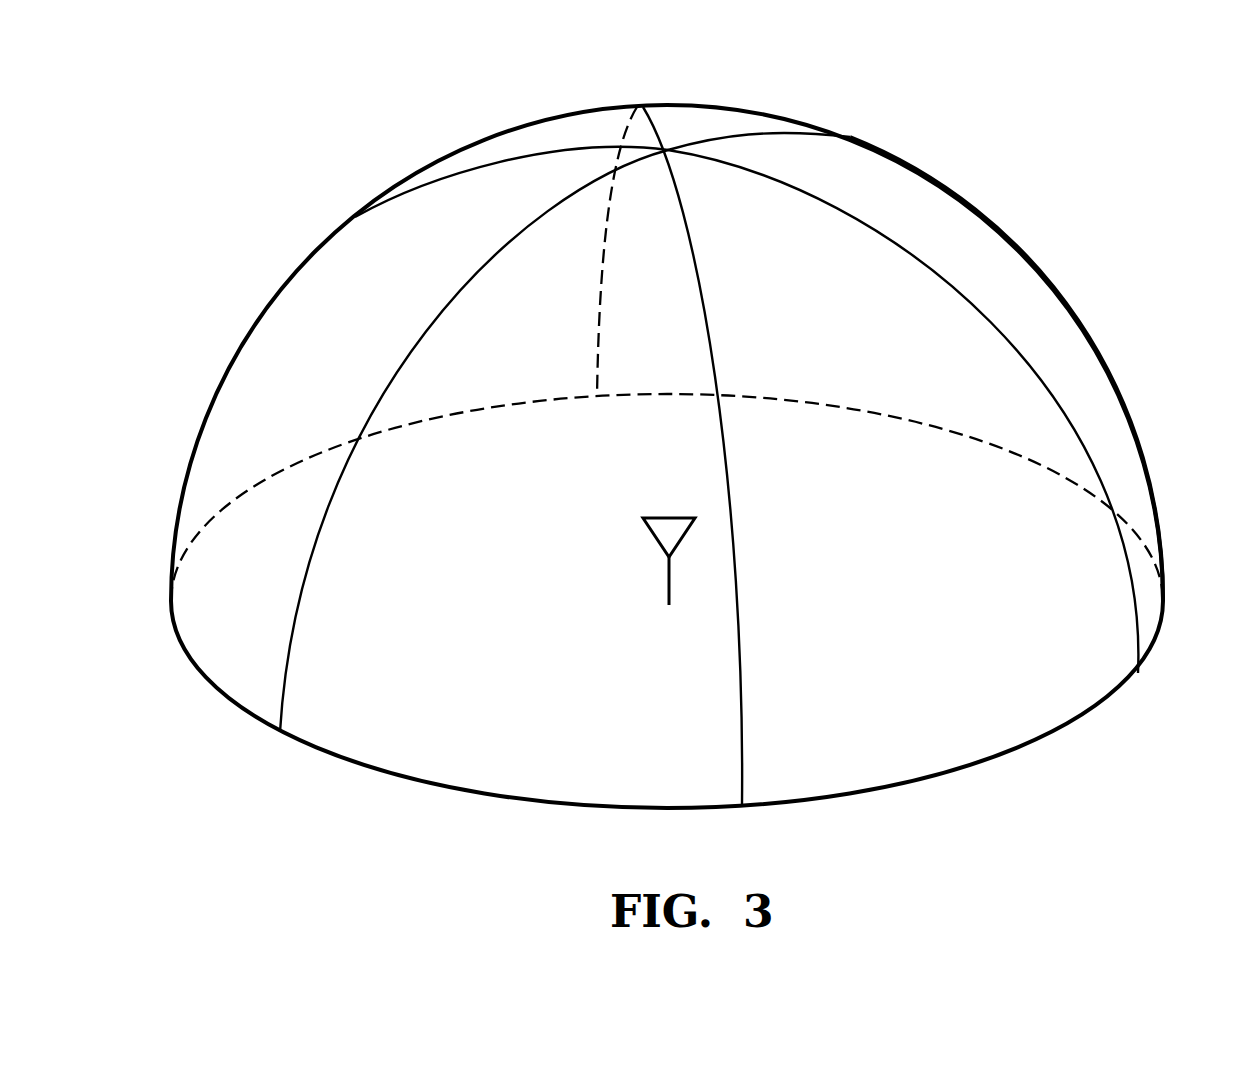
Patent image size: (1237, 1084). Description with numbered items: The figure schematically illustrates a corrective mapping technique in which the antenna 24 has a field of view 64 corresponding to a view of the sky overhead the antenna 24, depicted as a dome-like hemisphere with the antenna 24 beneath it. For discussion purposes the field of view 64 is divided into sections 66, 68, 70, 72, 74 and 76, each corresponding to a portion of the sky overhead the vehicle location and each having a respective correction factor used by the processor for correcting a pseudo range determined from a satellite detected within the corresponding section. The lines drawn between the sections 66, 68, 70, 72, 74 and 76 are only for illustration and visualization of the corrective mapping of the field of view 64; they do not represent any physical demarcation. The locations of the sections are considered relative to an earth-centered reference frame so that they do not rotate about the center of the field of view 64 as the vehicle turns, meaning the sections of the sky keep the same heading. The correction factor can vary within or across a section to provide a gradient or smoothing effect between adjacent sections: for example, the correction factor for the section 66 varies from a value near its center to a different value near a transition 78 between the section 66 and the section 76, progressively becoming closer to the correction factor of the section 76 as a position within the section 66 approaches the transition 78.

The antenna 24 is at (667, 572).
The field of view 64 is at (1100, 289).
The section 66 is at (935, 728).
The section 68 is at (403, 728).
The section 70 is at (377, 235).
The section 72 is at (587, 127).
The section 74 is at (713, 123).
The section 76 is at (952, 227).
The transition 78 is at (878, 233).